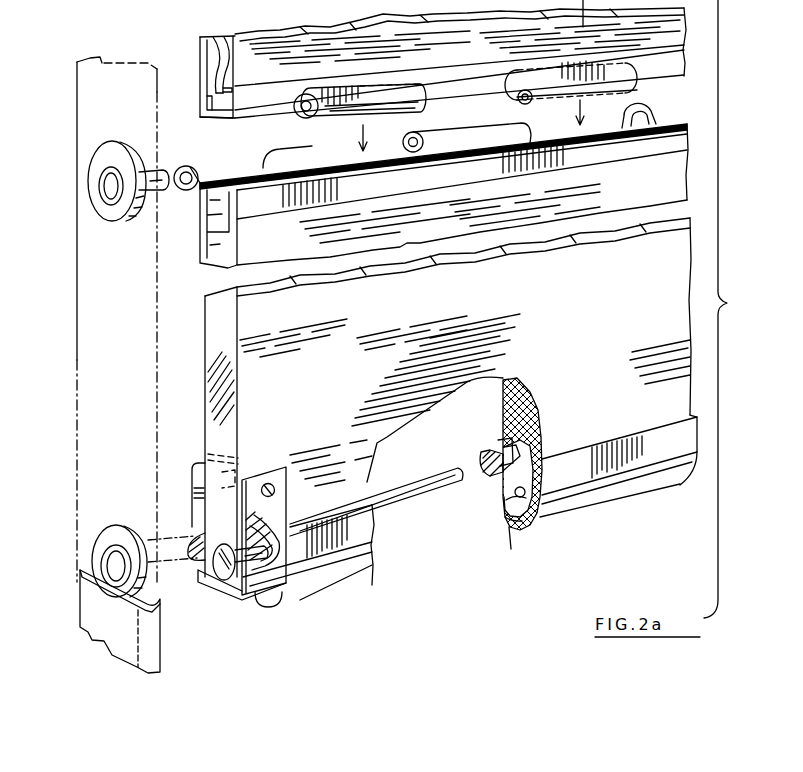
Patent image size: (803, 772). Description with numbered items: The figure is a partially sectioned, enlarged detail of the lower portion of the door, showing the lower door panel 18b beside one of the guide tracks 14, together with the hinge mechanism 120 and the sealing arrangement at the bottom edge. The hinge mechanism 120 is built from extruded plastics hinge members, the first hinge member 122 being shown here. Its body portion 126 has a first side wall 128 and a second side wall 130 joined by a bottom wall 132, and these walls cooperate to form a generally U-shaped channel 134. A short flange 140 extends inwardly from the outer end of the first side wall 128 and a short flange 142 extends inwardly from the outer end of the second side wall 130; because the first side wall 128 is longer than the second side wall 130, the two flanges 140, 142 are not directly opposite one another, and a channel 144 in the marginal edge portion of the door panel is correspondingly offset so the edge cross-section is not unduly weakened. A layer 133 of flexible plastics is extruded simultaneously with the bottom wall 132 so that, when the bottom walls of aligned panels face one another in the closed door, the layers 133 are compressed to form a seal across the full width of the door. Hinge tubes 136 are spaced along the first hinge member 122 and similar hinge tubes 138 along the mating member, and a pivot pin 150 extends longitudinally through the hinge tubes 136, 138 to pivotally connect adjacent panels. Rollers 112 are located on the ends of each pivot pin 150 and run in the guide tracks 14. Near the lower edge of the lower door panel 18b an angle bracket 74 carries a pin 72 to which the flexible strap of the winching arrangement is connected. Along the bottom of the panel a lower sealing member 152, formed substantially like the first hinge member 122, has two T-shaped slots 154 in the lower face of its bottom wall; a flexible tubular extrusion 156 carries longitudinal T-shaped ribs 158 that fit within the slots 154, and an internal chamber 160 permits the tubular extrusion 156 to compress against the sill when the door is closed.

The guide track 14 is at (78, 387).
The lower door panel 18b is at (622, 318).
The pin 72 is at (257, 587).
The angle bracket 74 is at (254, 530).
The roller 112 is at (100, 163).
The hinge mechanism 120 is at (648, 98).
The first hinge member 122 is at (483, 75).
The body portion 126 is at (200, 90).
The first side wall 128 is at (203, 101).
The second side wall 130 is at (236, 117).
The bottom wall 132 is at (213, 118).
The flexible layer 133 is at (243, 173).
The U-shaped channel 134 is at (222, 36).
The hinge tube 136 is at (520, 100).
The hinge tube 138 is at (403, 166).
The flange 140 is at (207, 62).
The flange 142 is at (233, 87).
The channel 144 is at (216, 95).
The pivot pin 150 is at (165, 192).
The lower sealing member 152 is at (623, 437).
The T-shaped slot 154 is at (540, 447).
The tubular extrusion 156 is at (508, 528).
The T-shaped rib 158 is at (505, 493).
The chamber 160 is at (511, 530).